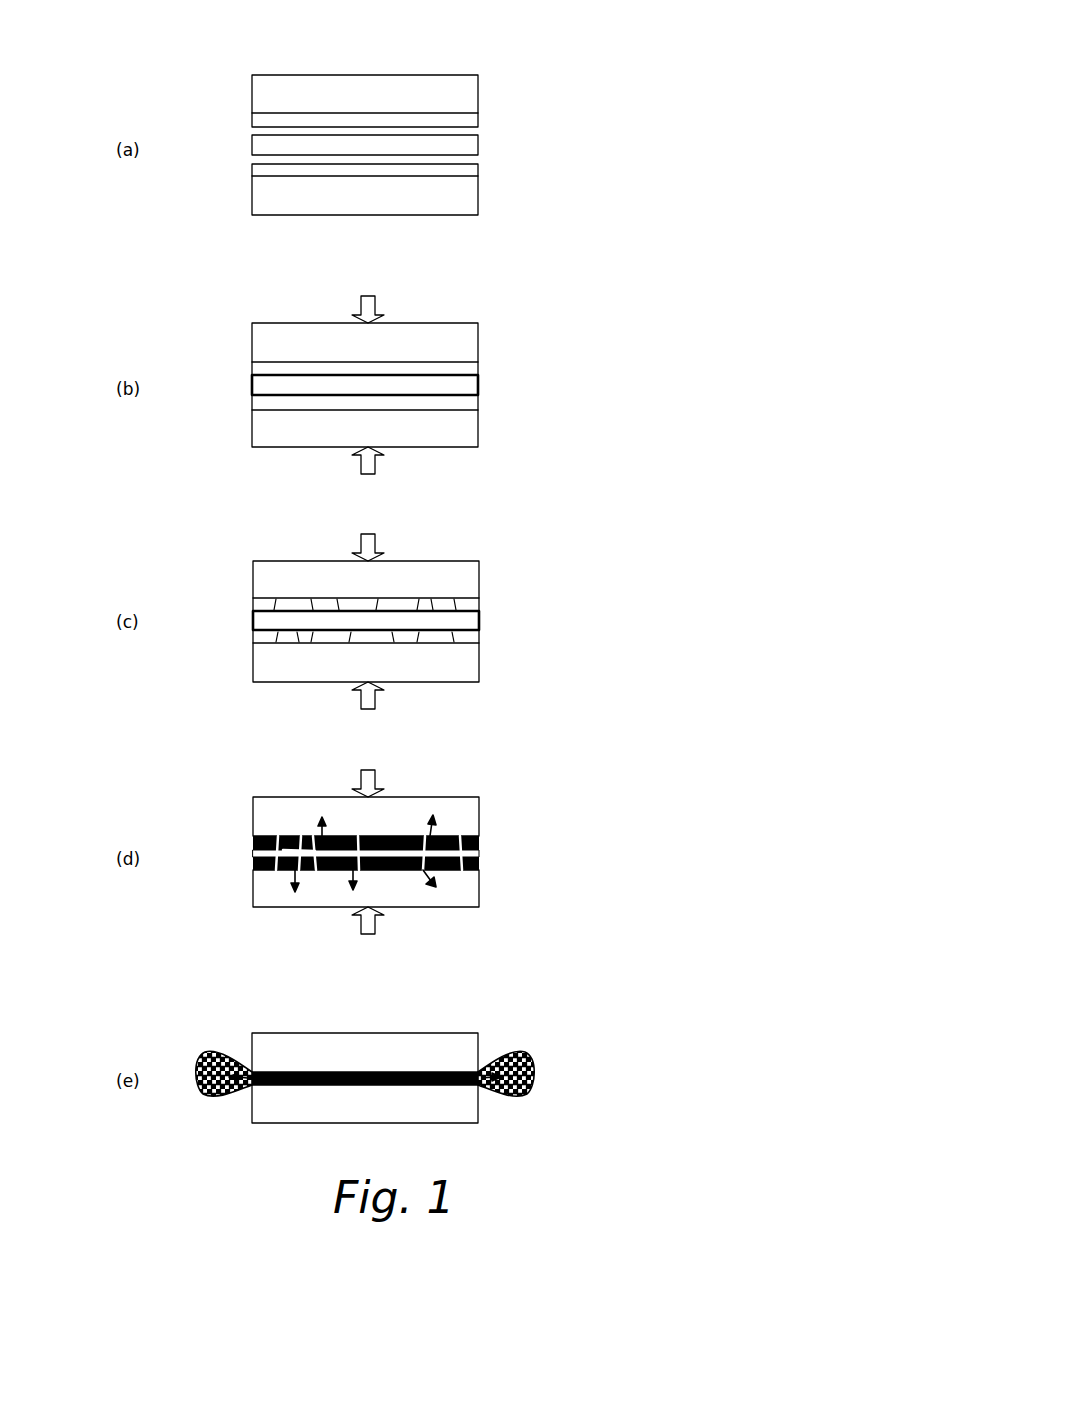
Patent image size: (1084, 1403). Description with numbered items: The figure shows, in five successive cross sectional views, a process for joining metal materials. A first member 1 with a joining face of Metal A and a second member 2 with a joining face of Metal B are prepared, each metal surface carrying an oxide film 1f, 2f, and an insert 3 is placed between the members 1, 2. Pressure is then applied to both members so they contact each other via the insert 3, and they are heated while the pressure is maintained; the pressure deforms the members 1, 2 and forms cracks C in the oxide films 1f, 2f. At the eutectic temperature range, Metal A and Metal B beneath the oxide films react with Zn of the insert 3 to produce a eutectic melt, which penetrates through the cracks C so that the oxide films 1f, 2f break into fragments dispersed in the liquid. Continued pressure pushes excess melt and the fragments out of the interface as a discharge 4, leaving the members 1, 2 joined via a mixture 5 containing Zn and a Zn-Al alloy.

The first member 1 is at (442, 200).
The oxide film 1f is at (460, 172).
The second member 2 is at (442, 90).
The oxide film 2f is at (468, 117).
The insert 3 is at (468, 143).
The discharge 4 is at (212, 1048).
The mixture 5 is at (314, 1086).
The cracks C is at (312, 605).